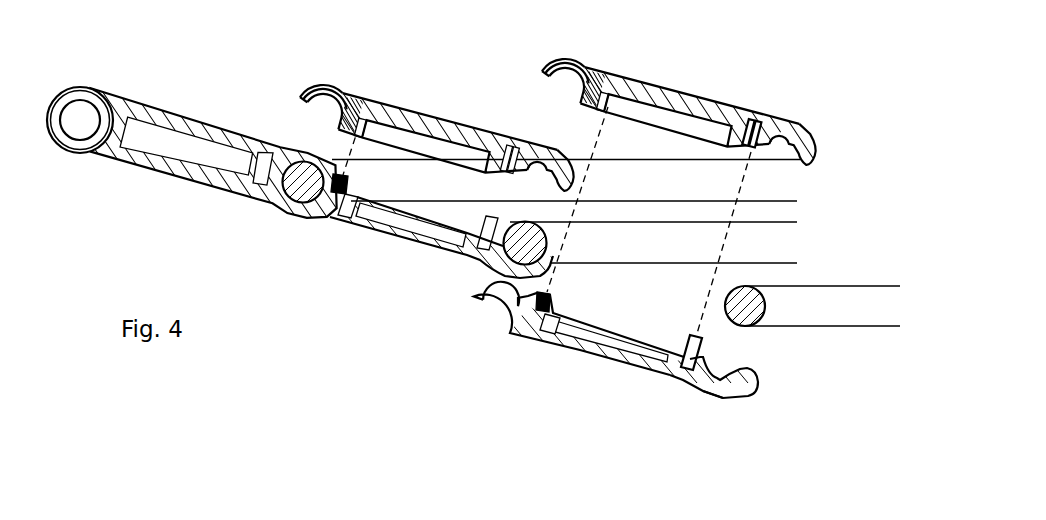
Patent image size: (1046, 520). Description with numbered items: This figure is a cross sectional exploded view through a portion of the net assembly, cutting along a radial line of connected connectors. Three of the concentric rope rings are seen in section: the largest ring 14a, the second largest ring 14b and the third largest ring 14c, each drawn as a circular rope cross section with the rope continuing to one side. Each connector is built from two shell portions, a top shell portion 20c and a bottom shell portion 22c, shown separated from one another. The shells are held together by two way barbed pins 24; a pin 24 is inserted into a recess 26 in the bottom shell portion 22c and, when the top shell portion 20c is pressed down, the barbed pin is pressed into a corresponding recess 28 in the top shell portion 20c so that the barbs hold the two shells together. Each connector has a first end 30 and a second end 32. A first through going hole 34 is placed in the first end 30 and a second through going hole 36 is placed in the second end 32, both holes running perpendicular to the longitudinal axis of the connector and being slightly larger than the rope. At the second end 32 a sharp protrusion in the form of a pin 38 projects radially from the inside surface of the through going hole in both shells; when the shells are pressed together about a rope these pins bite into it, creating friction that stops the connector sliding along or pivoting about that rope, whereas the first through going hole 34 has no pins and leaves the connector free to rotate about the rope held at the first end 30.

The largest ring 14a is at (303, 184).
The second largest ring 14b is at (520, 247).
The third largest ring 14c is at (763, 307).
The top shell portion 20c is at (686, 93).
The bottom shell portion 22c is at (610, 357).
The two way barbed pin 24 is at (553, 301).
The recess 26 is at (688, 336).
The recess 28 is at (757, 142).
The first end 30 is at (325, 85).
The second end 32 is at (553, 142).
The first through going hole 34 is at (79, 128).
The second through going hole 36 is at (727, 365).
The pin 38 is at (798, 160).